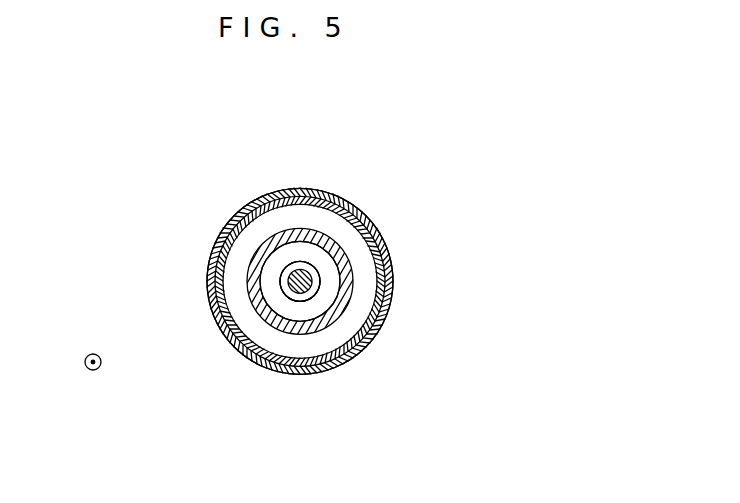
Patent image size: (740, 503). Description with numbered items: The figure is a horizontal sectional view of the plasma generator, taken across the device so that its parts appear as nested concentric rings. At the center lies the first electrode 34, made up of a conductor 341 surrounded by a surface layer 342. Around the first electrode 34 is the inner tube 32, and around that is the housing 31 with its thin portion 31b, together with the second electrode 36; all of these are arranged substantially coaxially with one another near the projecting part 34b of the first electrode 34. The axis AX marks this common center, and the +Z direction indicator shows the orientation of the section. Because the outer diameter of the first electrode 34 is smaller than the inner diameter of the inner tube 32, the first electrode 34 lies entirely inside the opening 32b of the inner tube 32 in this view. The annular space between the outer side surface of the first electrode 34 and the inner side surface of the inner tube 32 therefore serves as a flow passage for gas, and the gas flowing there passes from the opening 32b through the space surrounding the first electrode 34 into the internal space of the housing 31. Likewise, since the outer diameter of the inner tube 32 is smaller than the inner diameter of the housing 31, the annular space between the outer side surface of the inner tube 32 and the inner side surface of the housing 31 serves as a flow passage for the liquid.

The housing 31 is at (220, 233).
The thin portion of the housing 31b is at (300, 281).
The inner tube 32 is at (318, 327).
The opening of the inner tube 32b is at (335, 297).
The first electrode 34 is at (443, 146).
The projecting part 34b is at (300, 281).
The conductor 341 is at (300, 277).
The surface layer 342 is at (319, 282).
The second electrode 36 is at (206, 268).
The optical axis AX is at (300, 277).
The Z axis direction Z is at (94, 348).